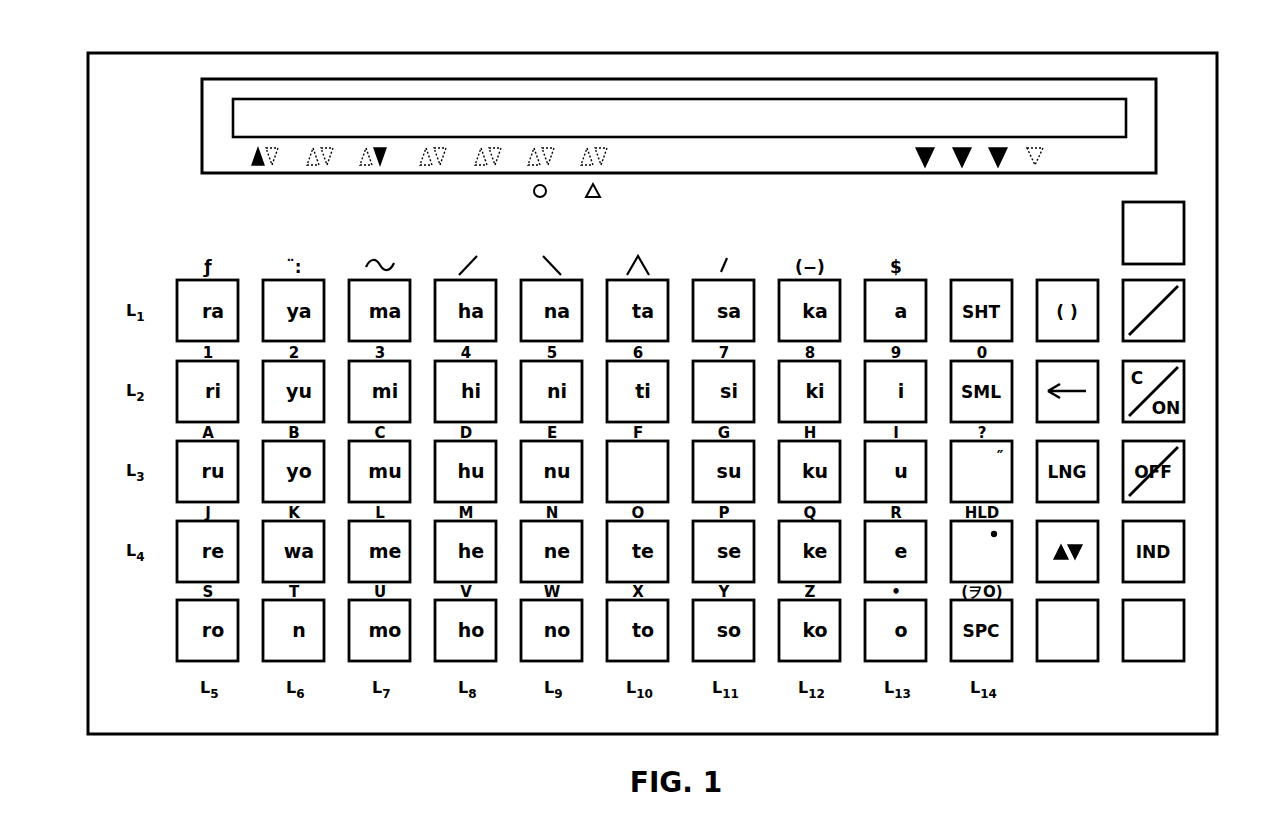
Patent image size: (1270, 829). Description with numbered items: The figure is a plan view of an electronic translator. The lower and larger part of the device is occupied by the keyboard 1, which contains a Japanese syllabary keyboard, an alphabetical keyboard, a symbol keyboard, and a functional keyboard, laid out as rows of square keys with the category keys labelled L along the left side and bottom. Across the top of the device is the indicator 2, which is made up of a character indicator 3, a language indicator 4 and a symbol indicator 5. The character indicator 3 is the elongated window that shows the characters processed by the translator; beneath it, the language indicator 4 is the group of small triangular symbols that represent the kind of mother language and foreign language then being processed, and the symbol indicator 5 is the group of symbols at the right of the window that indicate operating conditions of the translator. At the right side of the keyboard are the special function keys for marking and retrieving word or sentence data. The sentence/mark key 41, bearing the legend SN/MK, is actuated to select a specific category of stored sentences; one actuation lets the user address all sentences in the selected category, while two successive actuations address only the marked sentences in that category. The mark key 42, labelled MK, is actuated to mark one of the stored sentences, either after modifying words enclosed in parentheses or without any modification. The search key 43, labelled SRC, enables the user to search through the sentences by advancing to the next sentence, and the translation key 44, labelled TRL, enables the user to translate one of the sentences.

The keyboard 1 is at (607, 485).
The indicator 2 is at (805, 137).
The character indicator 3 is at (735, 118).
The language indicator 4 is at (412, 146).
The symbol indicator 5 is at (1012, 152).
The sentence/mark key 41 is at (1186, 310).
The mark key 42 is at (1185, 237).
The search key 43 is at (1152, 661).
The translation key 44 is at (1070, 661).